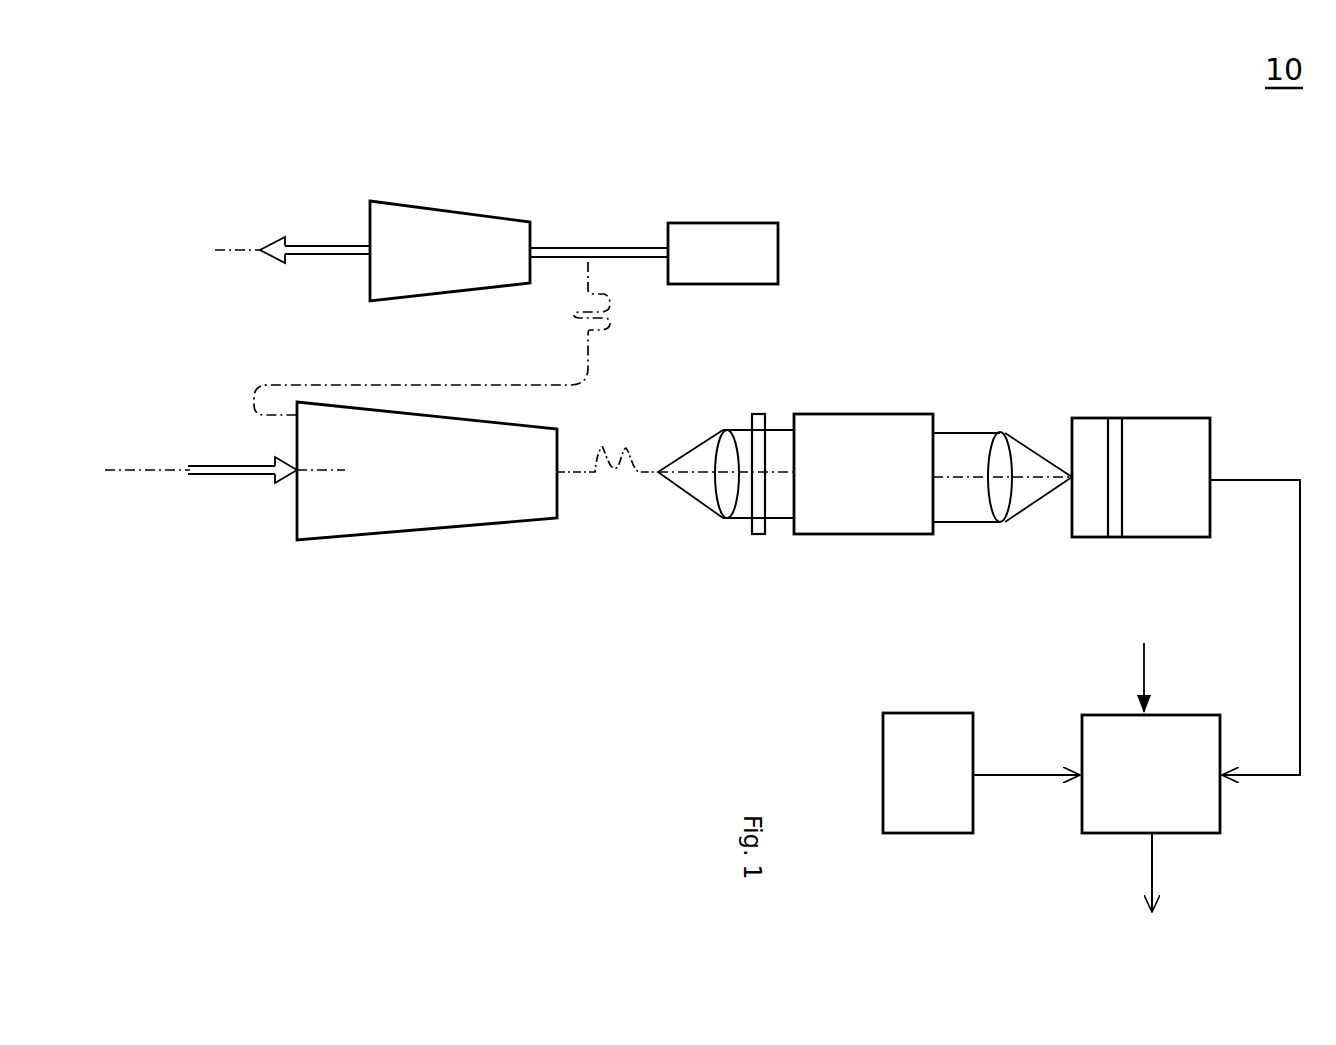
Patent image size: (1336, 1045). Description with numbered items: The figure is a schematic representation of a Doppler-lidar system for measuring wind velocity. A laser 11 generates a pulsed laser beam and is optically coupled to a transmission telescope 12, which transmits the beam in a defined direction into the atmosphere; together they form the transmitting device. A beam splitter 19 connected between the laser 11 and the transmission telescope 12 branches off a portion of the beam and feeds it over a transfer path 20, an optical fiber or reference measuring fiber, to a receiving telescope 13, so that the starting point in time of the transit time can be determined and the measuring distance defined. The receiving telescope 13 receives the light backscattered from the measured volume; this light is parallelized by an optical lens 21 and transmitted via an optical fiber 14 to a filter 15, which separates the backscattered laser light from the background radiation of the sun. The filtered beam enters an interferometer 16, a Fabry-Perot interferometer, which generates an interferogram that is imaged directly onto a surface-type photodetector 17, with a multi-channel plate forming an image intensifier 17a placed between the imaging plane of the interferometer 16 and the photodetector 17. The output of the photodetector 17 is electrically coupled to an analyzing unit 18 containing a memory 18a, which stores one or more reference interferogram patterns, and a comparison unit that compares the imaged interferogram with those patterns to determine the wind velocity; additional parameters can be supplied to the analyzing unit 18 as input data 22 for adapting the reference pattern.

The laser 11 is at (709, 236).
The transmission telescope 12 is at (428, 228).
The receiving telescope 13 is at (391, 500).
The optical fiber 14 is at (614, 488).
The filter 15 is at (756, 532).
The interferometer 16 is at (837, 534).
The photodetector 17 is at (1156, 427).
The image intensifier 17a is at (1071, 420).
The analyzing unit 18 is at (1188, 817).
The memory 18a is at (934, 817).
The beam splitter 19 is at (587, 262).
The transfer path 20 is at (603, 338).
The optical lens 21 is at (727, 497).
The input data 22 is at (1147, 686).